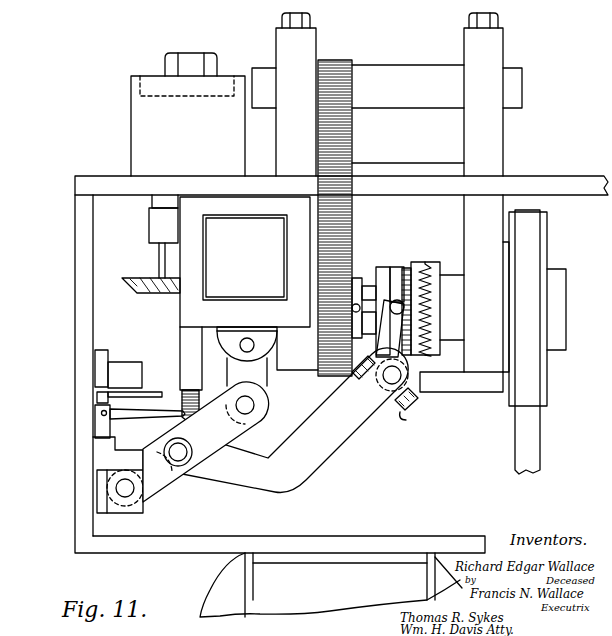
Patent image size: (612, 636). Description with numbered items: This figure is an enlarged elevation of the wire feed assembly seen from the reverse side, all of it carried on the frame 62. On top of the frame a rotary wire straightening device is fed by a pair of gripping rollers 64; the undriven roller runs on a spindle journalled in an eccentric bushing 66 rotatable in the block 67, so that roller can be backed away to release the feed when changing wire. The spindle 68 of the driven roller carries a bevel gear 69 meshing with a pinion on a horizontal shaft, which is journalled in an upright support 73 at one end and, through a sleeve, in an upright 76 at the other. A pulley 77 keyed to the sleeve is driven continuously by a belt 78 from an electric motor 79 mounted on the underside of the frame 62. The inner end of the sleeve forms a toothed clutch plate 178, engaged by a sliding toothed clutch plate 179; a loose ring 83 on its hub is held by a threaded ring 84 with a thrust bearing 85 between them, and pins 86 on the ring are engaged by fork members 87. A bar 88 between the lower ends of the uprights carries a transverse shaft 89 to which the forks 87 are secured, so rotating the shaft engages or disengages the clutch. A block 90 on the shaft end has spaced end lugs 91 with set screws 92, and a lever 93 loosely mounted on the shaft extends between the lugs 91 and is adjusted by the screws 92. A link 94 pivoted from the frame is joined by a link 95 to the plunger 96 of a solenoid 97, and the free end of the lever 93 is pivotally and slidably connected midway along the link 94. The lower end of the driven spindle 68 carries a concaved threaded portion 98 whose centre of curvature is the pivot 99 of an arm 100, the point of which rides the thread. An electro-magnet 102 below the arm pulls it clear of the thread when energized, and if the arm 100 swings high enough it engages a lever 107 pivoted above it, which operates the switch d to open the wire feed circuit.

The frame 62 is at (105, 186).
The gripping rollers 64 is at (158, 76).
The eccentric bushing 66 is at (135, 362).
The block 67 is at (133, 122).
The spindle of the driven roller 68 is at (186, 358).
The bevel gear 69 is at (140, 284).
The upright support 73 is at (284, 50).
The upright 76 is at (493, 52).
The pulley 77 is at (548, 239).
The belt 78 is at (533, 437).
The electric motor 79 is at (221, 590).
The ring 83 is at (399, 266).
The ring 84 is at (382, 266).
The thrust bearing 85 is at (426, 262).
The pins 86 is at (430, 325).
The fork members 87 is at (400, 346).
The bar 88 is at (480, 393).
The shaft 89 is at (402, 392).
The block 90 is at (384, 395).
The end lugs 91 is at (348, 378).
The set screws 92 is at (414, 415).
The lever 93 is at (318, 456).
The link 94 is at (163, 472).
The link 95 is at (255, 397).
The plunger 96 is at (245, 333).
The solenoid 97 is at (215, 252).
The threaded portion 98 is at (191, 391).
The pivot 99 is at (95, 414).
The arm 100 is at (130, 412).
The electro-magnet 102 is at (127, 442).
The lever 107 is at (110, 398).
The toothed clutch plate 178 is at (432, 268).
The toothed clutch plate 179 is at (407, 268).
The switch d is at (117, 373).